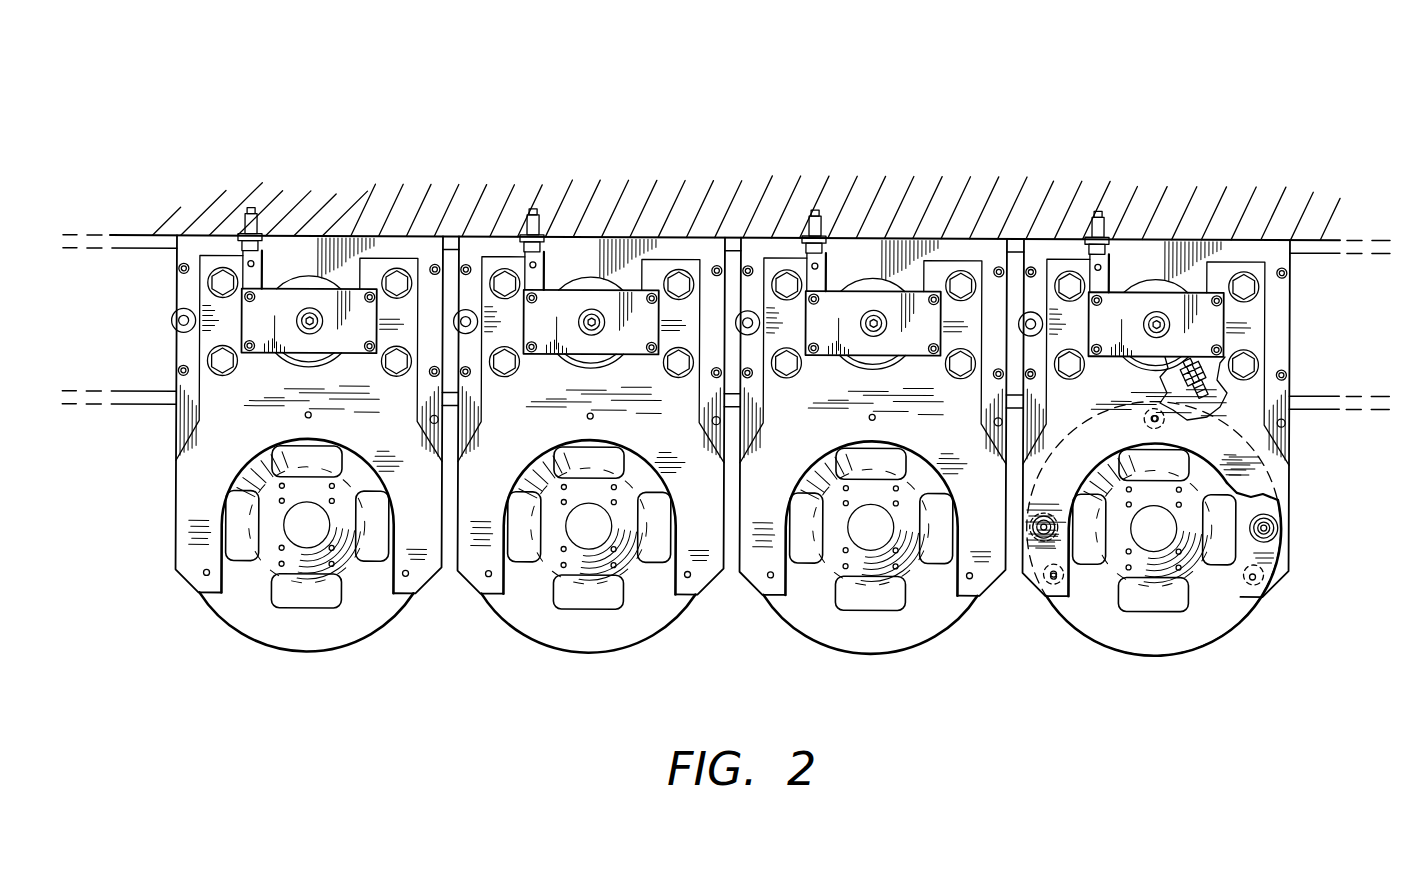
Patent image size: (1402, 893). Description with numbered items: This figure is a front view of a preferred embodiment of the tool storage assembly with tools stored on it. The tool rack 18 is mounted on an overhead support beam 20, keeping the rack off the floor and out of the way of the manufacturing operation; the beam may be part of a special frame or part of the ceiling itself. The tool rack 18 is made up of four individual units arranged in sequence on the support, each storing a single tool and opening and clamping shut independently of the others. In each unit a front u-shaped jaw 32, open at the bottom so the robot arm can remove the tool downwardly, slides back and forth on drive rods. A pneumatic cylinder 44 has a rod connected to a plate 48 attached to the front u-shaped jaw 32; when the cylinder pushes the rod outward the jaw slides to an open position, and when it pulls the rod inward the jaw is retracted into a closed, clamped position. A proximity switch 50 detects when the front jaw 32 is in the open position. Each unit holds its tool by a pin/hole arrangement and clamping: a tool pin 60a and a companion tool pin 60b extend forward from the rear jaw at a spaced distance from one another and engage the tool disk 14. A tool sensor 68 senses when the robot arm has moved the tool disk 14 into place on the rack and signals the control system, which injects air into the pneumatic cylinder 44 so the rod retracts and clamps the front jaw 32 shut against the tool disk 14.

The tool disk 14 is at (1167, 633).
The tool rack 18 is at (784, 443).
The overhead support beam 20 is at (857, 197).
The front u-shaped jaw 32 is at (1273, 463).
The pneumatic cylinder 44 is at (1153, 283).
The plate 48 is at (1213, 326).
The proximity switch 50 is at (1100, 210).
The tool pin 60a is at (1283, 580).
The companion tool pin 60b is at (1048, 540).
The tool sensor 68 is at (1195, 392).